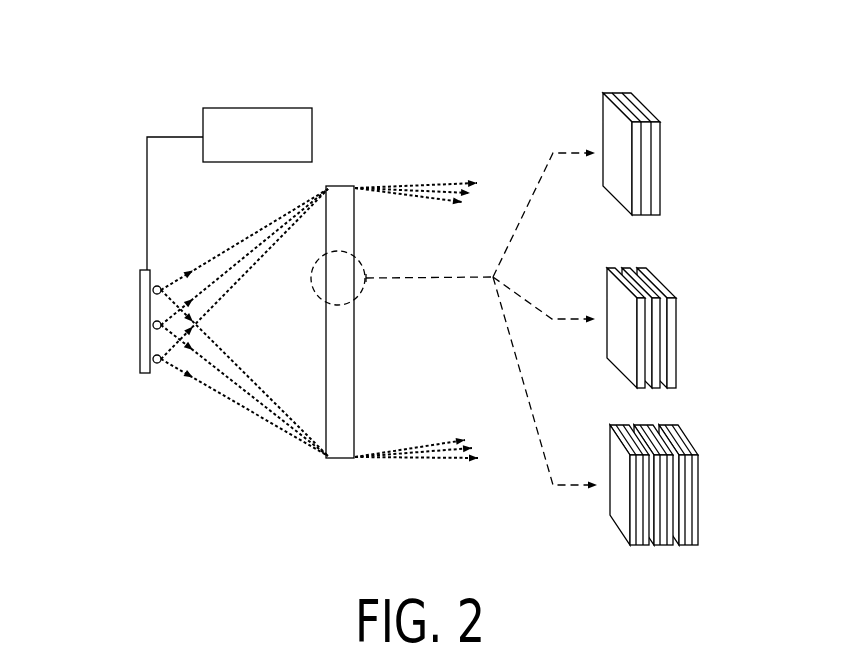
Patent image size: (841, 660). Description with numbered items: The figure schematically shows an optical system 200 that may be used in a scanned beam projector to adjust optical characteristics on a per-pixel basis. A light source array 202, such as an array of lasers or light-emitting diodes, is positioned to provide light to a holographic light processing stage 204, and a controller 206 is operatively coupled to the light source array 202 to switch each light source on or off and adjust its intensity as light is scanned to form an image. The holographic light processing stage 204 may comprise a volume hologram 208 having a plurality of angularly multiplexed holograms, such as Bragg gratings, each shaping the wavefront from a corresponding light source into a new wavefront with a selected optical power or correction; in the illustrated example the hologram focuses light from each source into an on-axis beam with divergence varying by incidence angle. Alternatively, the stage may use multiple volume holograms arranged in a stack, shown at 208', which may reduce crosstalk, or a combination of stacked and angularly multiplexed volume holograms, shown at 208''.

The optical system 200 is at (136, 58).
The light source array 202 is at (140, 338).
The holographic light processing stage 204 is at (354, 366).
The controller 206 is at (265, 108).
The volume hologram 208 is at (675, 154).
The stacked volume holograms 208' is at (690, 328).
The combination of stacked and angularly multiplexed volume holograms 208'' is at (702, 493).